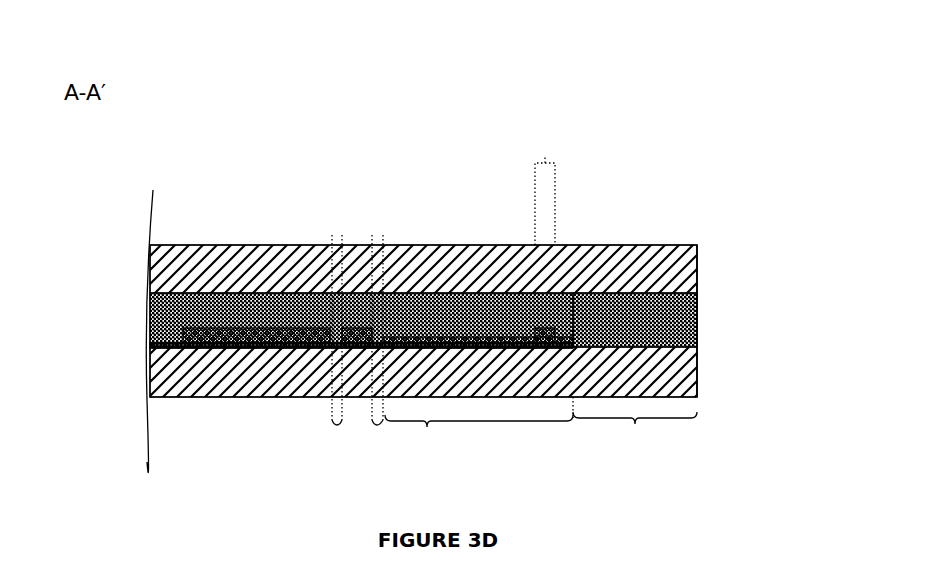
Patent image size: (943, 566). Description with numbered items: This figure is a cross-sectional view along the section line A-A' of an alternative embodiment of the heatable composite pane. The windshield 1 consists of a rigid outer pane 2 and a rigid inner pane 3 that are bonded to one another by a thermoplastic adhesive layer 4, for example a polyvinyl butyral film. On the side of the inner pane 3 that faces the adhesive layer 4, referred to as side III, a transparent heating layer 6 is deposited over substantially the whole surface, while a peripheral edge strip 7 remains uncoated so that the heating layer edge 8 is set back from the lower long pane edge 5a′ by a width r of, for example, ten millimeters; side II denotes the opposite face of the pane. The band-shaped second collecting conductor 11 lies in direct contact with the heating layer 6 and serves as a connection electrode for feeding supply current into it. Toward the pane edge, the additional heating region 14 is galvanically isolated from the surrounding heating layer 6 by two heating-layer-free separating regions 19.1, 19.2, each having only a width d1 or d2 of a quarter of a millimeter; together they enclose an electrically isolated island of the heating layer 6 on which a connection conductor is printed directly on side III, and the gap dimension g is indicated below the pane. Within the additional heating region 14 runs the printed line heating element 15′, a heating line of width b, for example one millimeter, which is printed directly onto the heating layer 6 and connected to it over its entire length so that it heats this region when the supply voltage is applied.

The windshield 1 is at (235, 218).
The outer pane 2 is at (447, 255).
The inner pane 3 is at (507, 385).
The adhesive layer 4 is at (498, 312).
The additional heating region 14 is at (434, 318).
The edge strip 7 is at (636, 338).
The second collecting conductor 11 is at (208, 347).
The heating layer 6 is at (265, 347).
The separating region 19.1 is at (340, 330).
The separating region 19.2 is at (381, 330).
The heating layer edge 8 is at (577, 333).
The line heating element 15′ is at (573, 338).
The width of the heating line b is at (545, 187).
The width of the separating region d1 is at (450, 349).
The width of the separating region d2 is at (377, 441).
The length g is at (479, 442).
The width r is at (635, 435).
The side III is at (683, 300).
The region II is at (667, 343).
The lower long pane edge 5a′ is at (745, 323).